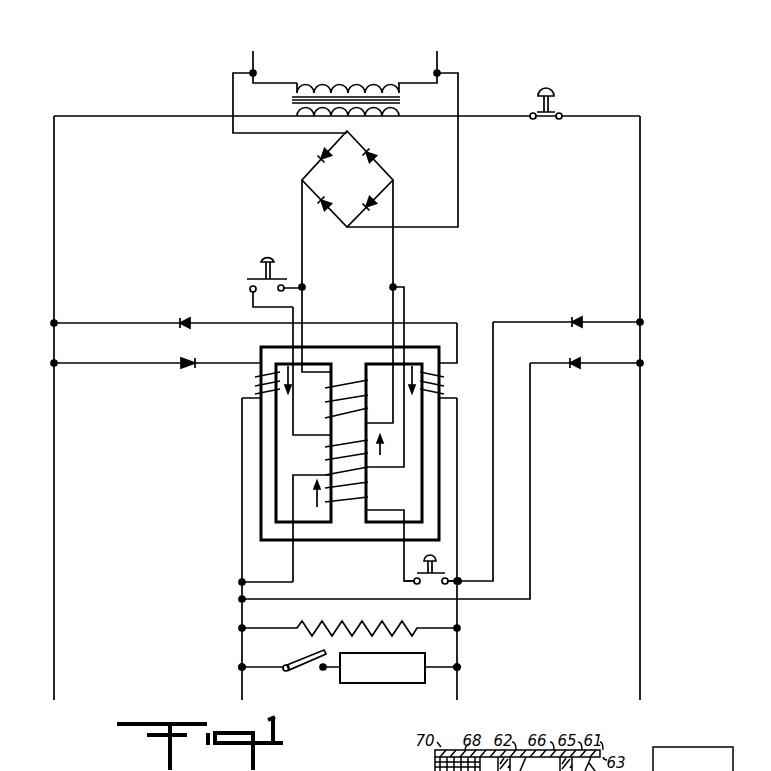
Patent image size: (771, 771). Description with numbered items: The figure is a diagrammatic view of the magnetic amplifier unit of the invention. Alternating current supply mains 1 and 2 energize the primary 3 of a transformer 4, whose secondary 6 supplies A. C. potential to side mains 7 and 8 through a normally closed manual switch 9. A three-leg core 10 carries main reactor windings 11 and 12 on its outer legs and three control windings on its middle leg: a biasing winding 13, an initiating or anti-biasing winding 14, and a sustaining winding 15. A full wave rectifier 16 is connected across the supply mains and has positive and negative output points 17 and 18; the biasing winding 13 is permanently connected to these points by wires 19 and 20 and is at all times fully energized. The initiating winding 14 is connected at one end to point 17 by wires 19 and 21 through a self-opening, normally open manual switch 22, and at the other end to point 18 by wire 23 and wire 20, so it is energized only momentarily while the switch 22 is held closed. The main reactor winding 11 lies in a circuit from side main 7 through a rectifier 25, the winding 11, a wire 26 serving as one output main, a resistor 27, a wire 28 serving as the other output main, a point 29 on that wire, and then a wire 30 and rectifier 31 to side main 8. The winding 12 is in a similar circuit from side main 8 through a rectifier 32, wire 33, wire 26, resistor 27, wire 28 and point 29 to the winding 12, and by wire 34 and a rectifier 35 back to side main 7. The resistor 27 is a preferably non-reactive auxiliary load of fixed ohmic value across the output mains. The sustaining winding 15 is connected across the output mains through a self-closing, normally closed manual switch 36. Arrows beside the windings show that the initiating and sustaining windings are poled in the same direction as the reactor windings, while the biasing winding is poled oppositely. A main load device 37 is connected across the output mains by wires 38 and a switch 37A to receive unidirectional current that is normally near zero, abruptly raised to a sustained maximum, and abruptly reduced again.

The alternating current supply main 1 is at (255, 72).
The alternating current supply main 2 is at (438, 72).
The primary 3 is at (313, 83).
The transformer 4 is at (291, 100).
The secondary 6 is at (364, 121).
The side main 7 is at (57, 241).
The side main 8 is at (642, 198).
The manual switch 9 is at (559, 110).
The three-leg core 10 is at (412, 357).
The main reactor winding 11 is at (255, 383).
The main reactor winding 12 is at (442, 389).
The biasing winding 13 is at (335, 378).
The initiating winding 14 is at (337, 433).
The sustaining winding 15 is at (363, 473).
The full wave rectifier 16 is at (356, 188).
The positive output point 17 is at (302, 178).
The negative output point 18 is at (394, 179).
The wire 19 is at (304, 244).
The wire 20 is at (391, 247).
The wire 21 is at (290, 336).
The self-opening manual switch 22 is at (249, 283).
The wire 23 is at (405, 296).
The rectifier 25 is at (185, 369).
The wire 26 is at (241, 613).
The resistor 27 is at (353, 623).
The wire 28 is at (459, 612).
The point 29 is at (460, 578).
The wire 30 is at (494, 557).
The rectifier 31 is at (583, 320).
The rectifier 32 is at (584, 363).
The wire 33 is at (532, 557).
The wire 34 is at (458, 349).
The rectifier 35 is at (173, 319).
The self-closing manual switch 36 is at (410, 575).
The main load device 37 is at (374, 676).
The switch 37A is at (308, 652).
The wires 38 is at (259, 672).